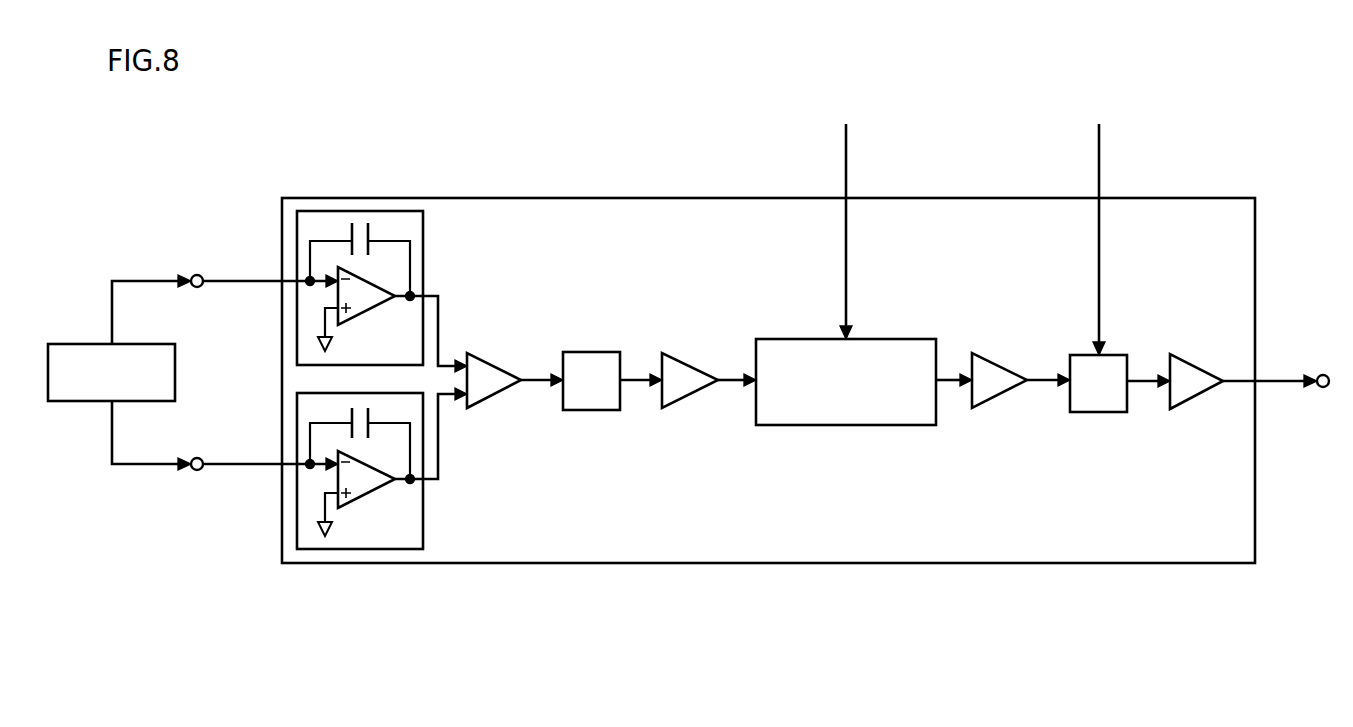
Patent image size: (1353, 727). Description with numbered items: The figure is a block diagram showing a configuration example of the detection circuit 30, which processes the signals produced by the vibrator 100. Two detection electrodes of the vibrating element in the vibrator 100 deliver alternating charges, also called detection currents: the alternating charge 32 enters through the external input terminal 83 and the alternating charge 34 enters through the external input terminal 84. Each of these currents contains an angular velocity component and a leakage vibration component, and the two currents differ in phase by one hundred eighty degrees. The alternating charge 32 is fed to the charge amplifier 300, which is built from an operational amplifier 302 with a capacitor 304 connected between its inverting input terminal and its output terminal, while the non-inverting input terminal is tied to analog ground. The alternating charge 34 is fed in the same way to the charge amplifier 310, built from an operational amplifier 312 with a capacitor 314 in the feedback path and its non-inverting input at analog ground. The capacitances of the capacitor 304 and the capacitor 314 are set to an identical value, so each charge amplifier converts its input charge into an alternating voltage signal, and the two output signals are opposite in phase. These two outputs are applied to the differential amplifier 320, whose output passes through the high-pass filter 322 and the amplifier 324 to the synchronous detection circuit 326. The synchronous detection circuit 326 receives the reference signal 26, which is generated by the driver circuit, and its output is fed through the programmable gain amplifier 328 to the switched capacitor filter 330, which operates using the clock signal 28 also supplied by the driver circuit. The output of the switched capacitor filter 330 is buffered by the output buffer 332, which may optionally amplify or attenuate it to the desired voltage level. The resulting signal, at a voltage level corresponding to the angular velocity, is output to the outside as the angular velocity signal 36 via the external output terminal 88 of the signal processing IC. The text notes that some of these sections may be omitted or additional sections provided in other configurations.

The detection circuit 30 is at (1168, 199).
The vibrator 100 is at (175, 368).
The external input terminal 83 is at (197, 275).
The external input terminal 84 is at (197, 458).
The alternating charge (detection current) 32 is at (245, 281).
The alternating charge (detection current) 34 is at (245, 464).
The charge amplifier 300 is at (502, 291).
The operational amplifier 302 is at (365, 318).
The capacitor 304 is at (370, 236).
The charge amplifier 310 is at (502, 468).
The operational amplifier 312 is at (365, 501).
The capacitor 314 is at (370, 420).
The differential amplifier 320 is at (493, 360).
The high-pass filter (HPF) 322 is at (590, 352).
The amplifier 324 is at (688, 360).
The synchronous detection circuit 326 is at (905, 339).
The programmable gain amplifier 328 is at (998, 360).
The switched capacitor filter (SCF) 330 is at (1110, 355).
The output buffer 332 is at (1195, 361).
The reference signal 26 is at (846, 166).
The clock signal 28 is at (1099, 166).
The angular velocity signal 36 is at (1280, 381).
The external output terminal 88 is at (1325, 375).